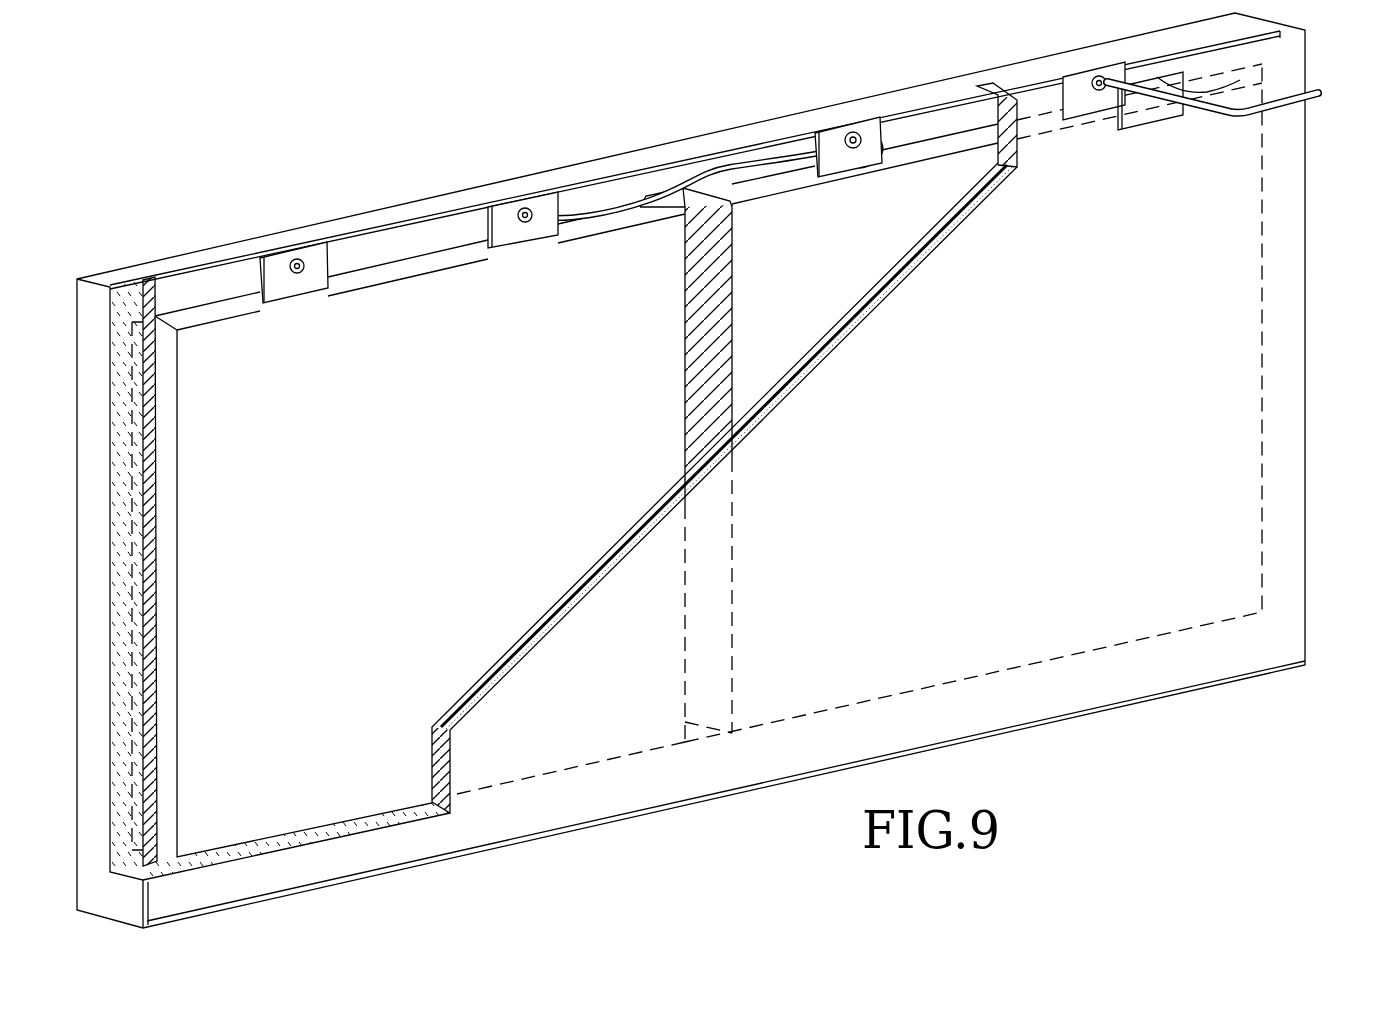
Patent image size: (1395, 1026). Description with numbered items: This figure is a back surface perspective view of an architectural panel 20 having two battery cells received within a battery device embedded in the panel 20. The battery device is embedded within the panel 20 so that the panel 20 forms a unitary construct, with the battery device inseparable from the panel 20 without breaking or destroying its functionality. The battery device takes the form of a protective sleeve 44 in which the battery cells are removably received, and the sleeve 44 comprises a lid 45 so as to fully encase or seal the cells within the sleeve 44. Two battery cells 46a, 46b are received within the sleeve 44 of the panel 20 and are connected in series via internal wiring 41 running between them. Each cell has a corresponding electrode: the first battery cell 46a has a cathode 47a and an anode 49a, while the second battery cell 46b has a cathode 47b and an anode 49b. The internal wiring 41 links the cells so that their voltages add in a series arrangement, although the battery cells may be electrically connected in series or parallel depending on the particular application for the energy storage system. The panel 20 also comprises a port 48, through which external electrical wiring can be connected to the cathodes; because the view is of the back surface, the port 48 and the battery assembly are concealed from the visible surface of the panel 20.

The panel 20 is at (1308, 212).
The internal wiring 41 is at (724, 162).
The protective sleeve 44 is at (133, 320).
The lid 45 is at (132, 268).
The battery cell 46a is at (403, 260).
The battery cell 46b is at (916, 143).
The cathode 47a is at (294, 250).
The cathode 47b is at (853, 128).
The port 48 is at (1217, 93).
The anode 49a is at (522, 208).
The anode 49b is at (1097, 76).